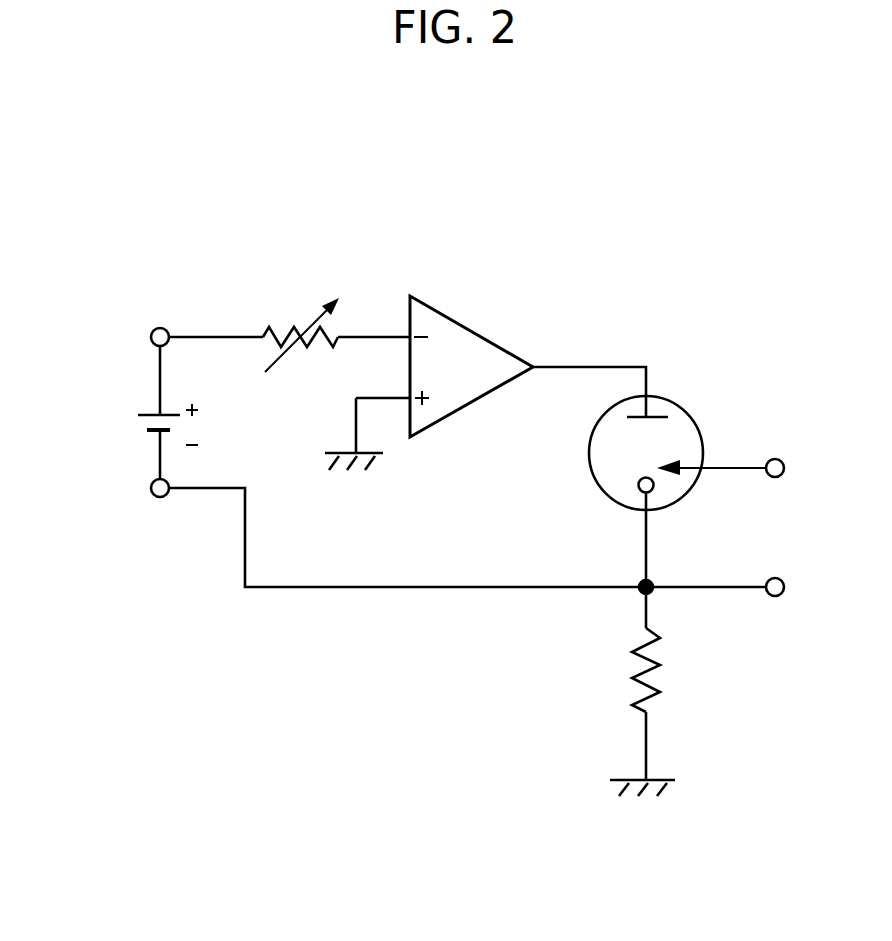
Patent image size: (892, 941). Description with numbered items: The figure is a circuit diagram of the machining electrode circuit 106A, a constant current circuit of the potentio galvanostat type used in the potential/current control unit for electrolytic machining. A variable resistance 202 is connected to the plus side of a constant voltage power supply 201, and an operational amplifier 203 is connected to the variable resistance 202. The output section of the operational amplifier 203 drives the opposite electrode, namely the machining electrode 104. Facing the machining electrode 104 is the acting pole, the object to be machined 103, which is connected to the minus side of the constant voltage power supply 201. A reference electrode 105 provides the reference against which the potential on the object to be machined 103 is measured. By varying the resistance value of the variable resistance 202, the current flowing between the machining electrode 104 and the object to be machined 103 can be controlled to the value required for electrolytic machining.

The machining electrode circuit 106A is at (420, 258).
The constant voltage power supply 201 is at (140, 428).
The variable resistance 202 is at (267, 318).
The operational amplifier 203 is at (480, 360).
The machining electrode 104 is at (653, 412).
The reference electrode 105 is at (683, 457).
The object to be machined 103 is at (638, 490).